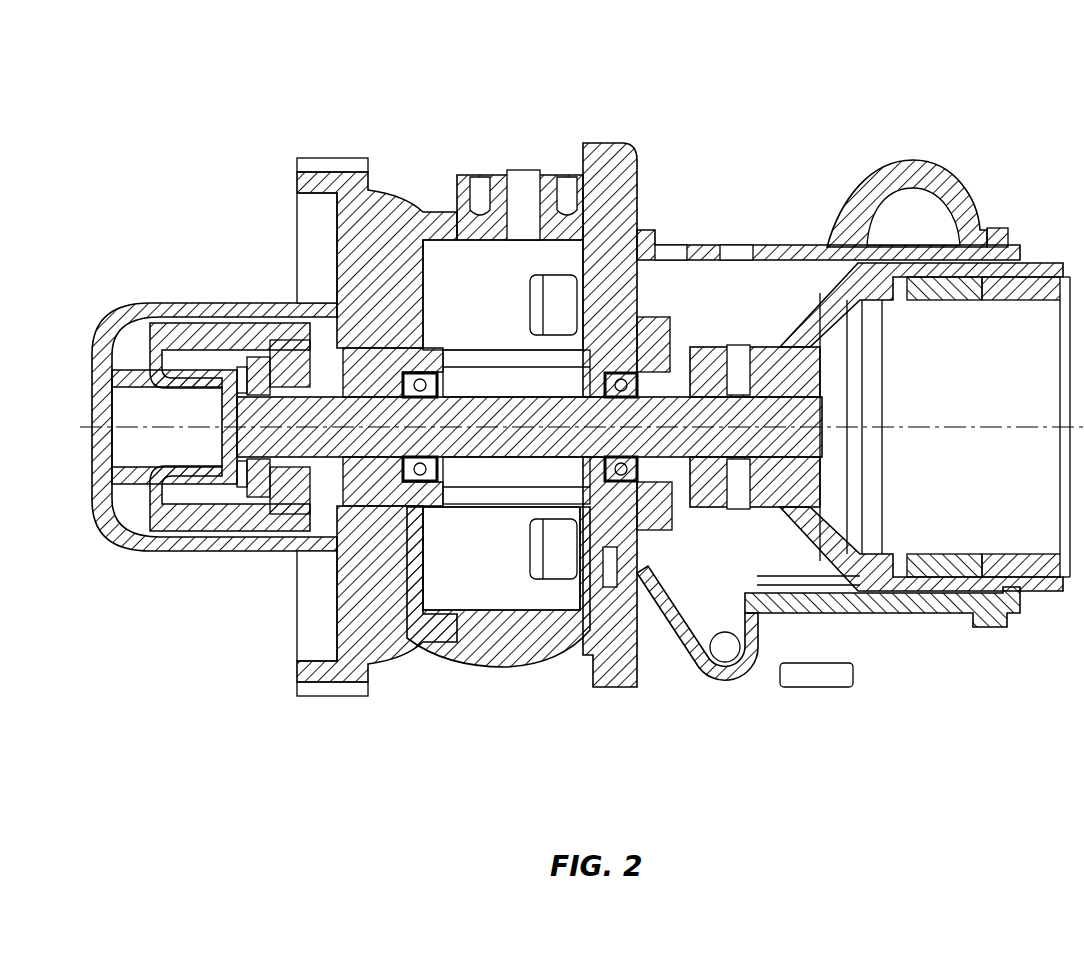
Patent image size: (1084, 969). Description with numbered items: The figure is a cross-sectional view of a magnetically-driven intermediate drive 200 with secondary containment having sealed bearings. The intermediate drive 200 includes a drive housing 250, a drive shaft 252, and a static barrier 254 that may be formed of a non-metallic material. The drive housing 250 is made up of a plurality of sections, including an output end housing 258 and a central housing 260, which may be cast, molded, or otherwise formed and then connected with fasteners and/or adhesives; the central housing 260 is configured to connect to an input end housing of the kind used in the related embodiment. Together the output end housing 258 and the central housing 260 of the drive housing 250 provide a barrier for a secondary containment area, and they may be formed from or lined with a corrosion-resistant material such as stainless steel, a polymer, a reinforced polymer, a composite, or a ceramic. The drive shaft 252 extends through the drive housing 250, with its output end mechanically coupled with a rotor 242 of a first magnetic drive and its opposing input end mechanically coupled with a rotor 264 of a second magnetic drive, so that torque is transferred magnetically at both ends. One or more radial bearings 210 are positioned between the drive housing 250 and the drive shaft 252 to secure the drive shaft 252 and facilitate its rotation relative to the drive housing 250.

The magnetically-driven intermediate drive 200 is at (203, 119).
The radial bearing 210 is at (445, 485).
The rotor of a first magnetic drive 242 is at (213, 533).
The drive housing 250 is at (742, 119).
The drive shaft 252 is at (462, 405).
The static barrier 254 is at (165, 303).
The output end housing 258 is at (800, 245).
The central housing 260 is at (335, 172).
The rotor of a second magnetic drive 264 is at (873, 570).